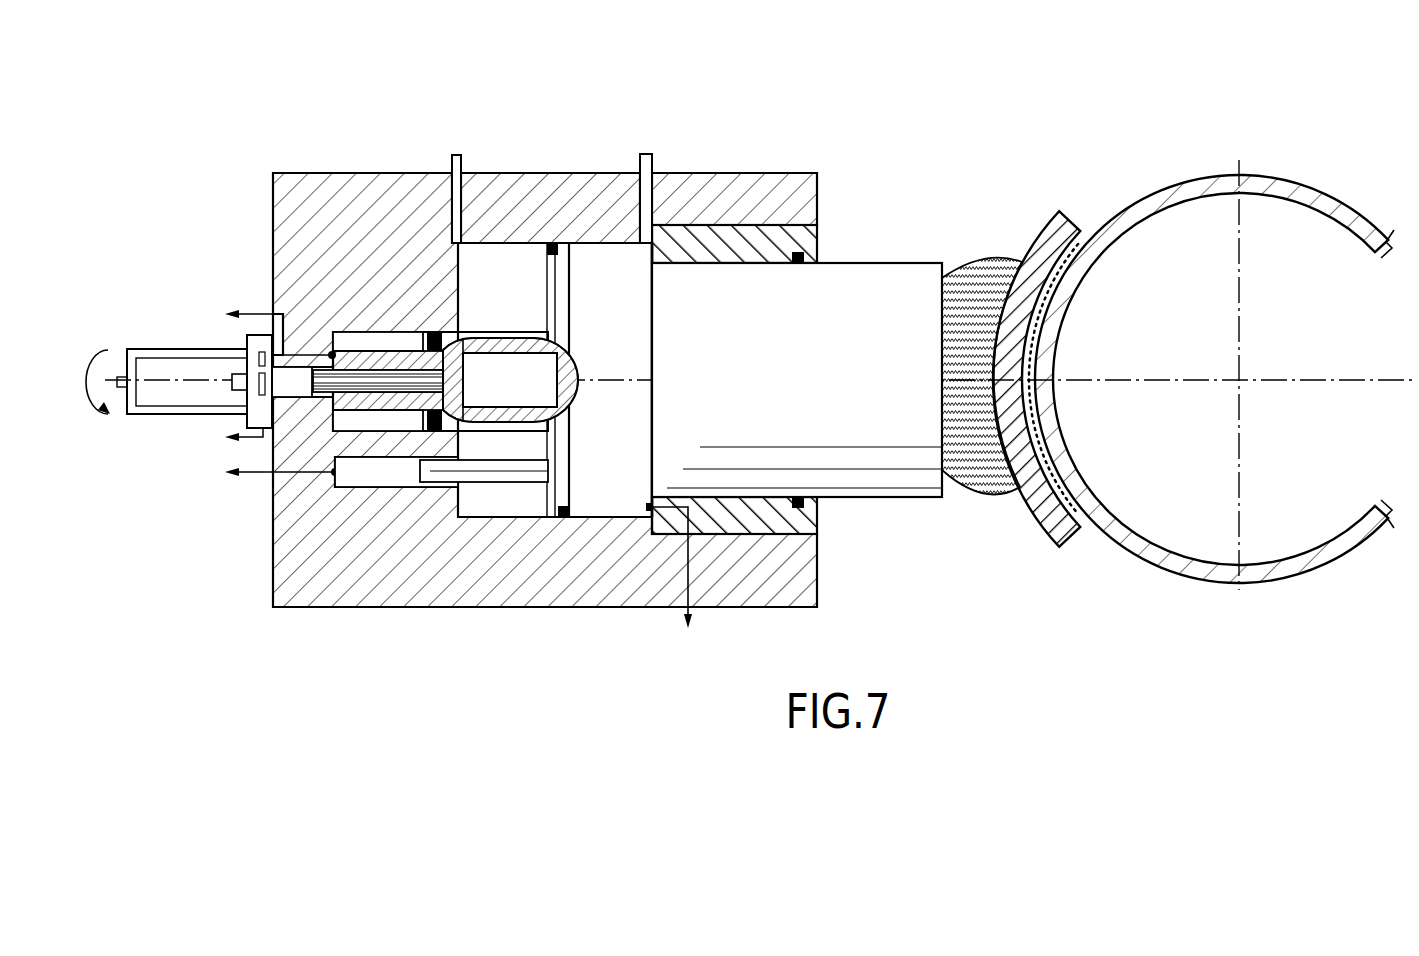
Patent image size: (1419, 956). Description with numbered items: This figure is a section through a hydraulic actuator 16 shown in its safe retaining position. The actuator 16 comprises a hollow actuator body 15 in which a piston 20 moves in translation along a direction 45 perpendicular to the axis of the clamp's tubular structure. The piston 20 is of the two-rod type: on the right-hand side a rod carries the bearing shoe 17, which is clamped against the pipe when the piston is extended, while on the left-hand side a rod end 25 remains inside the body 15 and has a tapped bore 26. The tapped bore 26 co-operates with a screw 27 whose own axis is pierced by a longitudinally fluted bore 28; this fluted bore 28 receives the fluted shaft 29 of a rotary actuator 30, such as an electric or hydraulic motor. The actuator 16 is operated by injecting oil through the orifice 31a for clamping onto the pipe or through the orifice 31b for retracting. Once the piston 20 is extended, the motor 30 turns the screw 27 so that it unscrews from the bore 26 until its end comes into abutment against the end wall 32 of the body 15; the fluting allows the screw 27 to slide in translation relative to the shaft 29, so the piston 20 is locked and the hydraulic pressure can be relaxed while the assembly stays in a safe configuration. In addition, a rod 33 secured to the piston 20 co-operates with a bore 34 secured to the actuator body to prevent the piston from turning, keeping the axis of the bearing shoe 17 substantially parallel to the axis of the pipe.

The hollow actuator body 15 is at (725, 570).
The actuator 16 is at (407, 612).
The bearing shoe 17 is at (1099, 522).
The piston 20 is at (932, 500).
The rod end 25 is at (493, 432).
The tapped bore 26 is at (517, 415).
The screw 27 is at (377, 357).
The fluted bore 28 is at (455, 370).
The fluted shaft 29 is at (320, 370).
The rotary actuator 30 is at (147, 414).
The orifice 31a is at (457, 128).
The orifice 31b is at (647, 128).
The end wall 32 is at (338, 426).
The rod 33 is at (470, 485).
The bore 34 is at (355, 487).
The direction 45 is at (1290, 380).